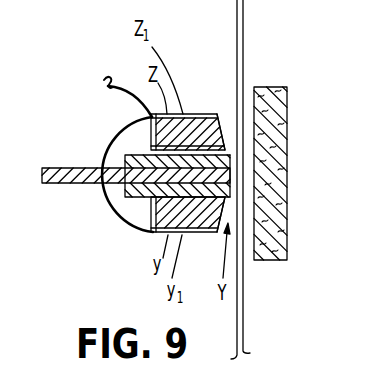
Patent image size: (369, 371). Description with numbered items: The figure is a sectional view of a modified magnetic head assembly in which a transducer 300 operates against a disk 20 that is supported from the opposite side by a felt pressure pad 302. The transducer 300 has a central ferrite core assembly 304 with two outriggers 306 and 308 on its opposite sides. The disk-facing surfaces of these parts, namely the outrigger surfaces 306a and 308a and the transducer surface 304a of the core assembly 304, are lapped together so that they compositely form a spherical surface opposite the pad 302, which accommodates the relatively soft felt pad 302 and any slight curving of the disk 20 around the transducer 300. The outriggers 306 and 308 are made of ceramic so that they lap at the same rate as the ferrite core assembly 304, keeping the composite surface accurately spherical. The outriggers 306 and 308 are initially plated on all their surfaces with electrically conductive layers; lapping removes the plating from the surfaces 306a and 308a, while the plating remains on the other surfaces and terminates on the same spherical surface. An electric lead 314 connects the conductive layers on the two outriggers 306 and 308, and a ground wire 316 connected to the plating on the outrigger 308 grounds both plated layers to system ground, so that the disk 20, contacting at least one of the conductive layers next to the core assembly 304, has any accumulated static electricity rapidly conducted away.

The disk 20 is at (237, 40).
The transducer 300 is at (188, 96).
The felt pressure pad 302 is at (287, 246).
The core assembly 304 is at (118, 191).
The transducer surface 304a is at (230, 167).
The outrigger 306 is at (202, 222).
The outrigger surface 306a is at (230, 210).
The outrigger 308 is at (203, 114).
The outrigger surface 308a is at (223, 133).
The electric lead 314 is at (123, 223).
The ground wire 316 is at (115, 78).